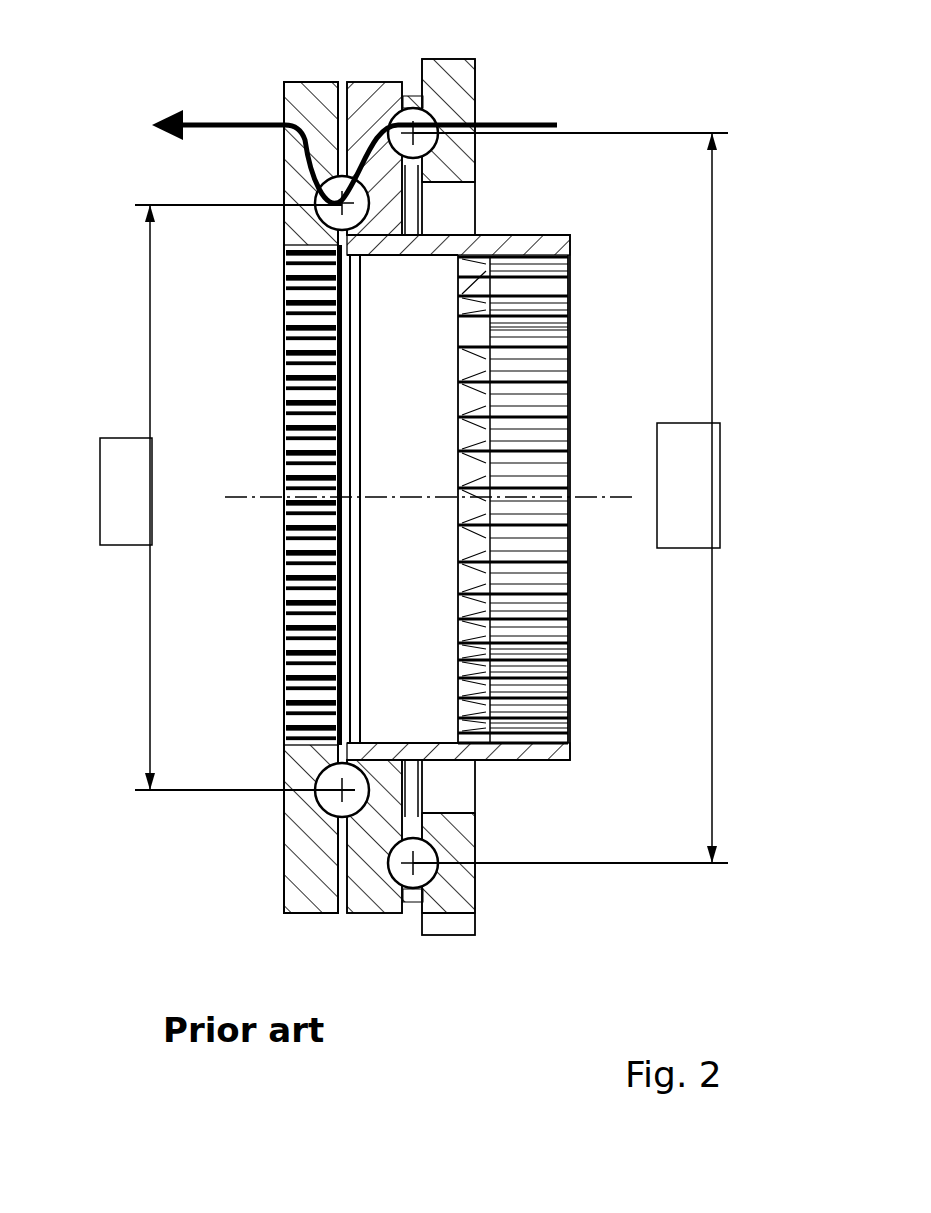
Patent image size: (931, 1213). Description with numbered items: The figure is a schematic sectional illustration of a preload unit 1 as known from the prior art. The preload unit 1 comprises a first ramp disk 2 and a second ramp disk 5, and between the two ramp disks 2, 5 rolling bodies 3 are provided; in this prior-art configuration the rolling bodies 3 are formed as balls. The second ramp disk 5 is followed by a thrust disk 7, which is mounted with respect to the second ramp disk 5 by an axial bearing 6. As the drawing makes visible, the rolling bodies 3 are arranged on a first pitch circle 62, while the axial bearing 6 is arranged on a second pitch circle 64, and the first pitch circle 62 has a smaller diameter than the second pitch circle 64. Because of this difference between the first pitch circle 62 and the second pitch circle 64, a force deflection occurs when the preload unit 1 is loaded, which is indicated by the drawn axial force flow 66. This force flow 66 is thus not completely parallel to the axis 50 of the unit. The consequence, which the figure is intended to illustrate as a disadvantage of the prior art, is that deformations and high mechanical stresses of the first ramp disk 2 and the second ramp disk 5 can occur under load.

The preload unit 1 is at (425, 488).
The first ramp disk 2 is at (333, 90).
The rolling bodies 3 is at (325, 785).
The second ramp disk 5 is at (378, 90).
The axial bearing 6 is at (420, 853).
The thrust disk 7 is at (460, 60).
The axis 50 is at (255, 495).
The first pitch circle 62 is at (150, 634).
The second pitch circle 64 is at (712, 305).
The axial force flow 66 is at (213, 123).